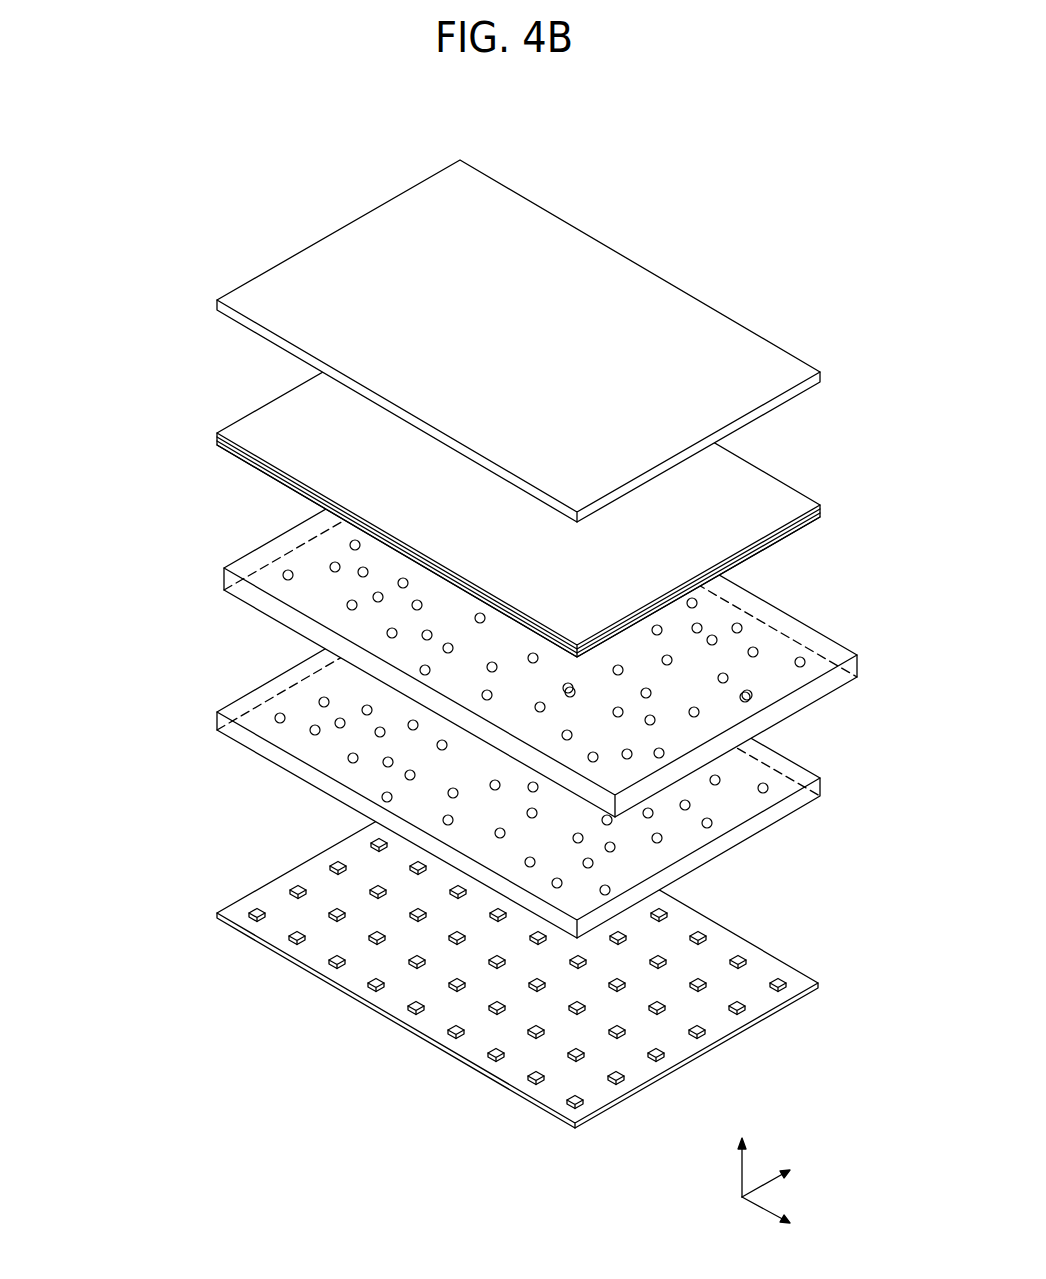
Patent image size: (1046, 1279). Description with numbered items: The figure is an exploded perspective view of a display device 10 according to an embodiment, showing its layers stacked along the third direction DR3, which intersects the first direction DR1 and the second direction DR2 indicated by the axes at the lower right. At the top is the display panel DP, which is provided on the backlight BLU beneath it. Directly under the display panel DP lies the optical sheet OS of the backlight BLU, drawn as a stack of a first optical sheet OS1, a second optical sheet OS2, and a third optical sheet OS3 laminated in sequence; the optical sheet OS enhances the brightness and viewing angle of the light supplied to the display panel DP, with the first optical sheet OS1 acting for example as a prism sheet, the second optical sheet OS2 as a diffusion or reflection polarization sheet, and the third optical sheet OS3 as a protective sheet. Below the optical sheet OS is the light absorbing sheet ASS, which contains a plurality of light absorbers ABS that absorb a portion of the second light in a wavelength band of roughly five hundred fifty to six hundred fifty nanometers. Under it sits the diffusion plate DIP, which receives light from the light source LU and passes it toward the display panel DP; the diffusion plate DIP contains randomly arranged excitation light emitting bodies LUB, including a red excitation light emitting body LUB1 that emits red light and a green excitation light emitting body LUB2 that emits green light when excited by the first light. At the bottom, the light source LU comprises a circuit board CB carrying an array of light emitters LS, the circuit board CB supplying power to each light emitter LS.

The display device 10 is at (690, 200).
The display panel DP is at (822, 372).
The backlight BLU is at (99, 423).
The optical sheet OS is at (586, 475).
The first optical sheet OS1 is at (823, 514).
The second optical sheet OS2 is at (822, 510).
The third optical sheet OS3 is at (821, 506).
The light absorbing sheet ASS is at (596, 622).
The light absorber ABS is at (737, 623).
The diffusion plate DIP is at (530, 754).
The light source LU is at (906, 923).
The light emitter LS is at (775, 976).
The circuit board CB is at (800, 983).
The excitation light emitting body LUB is at (151, 627).
The red excitation light emitting body LUB1 is at (280, 713).
The green excitation light emitting body LUB2 is at (323, 697).
The first direction DR1 is at (789, 1217).
The second direction DR2 is at (789, 1178).
The third direction DR3 is at (746, 1155).